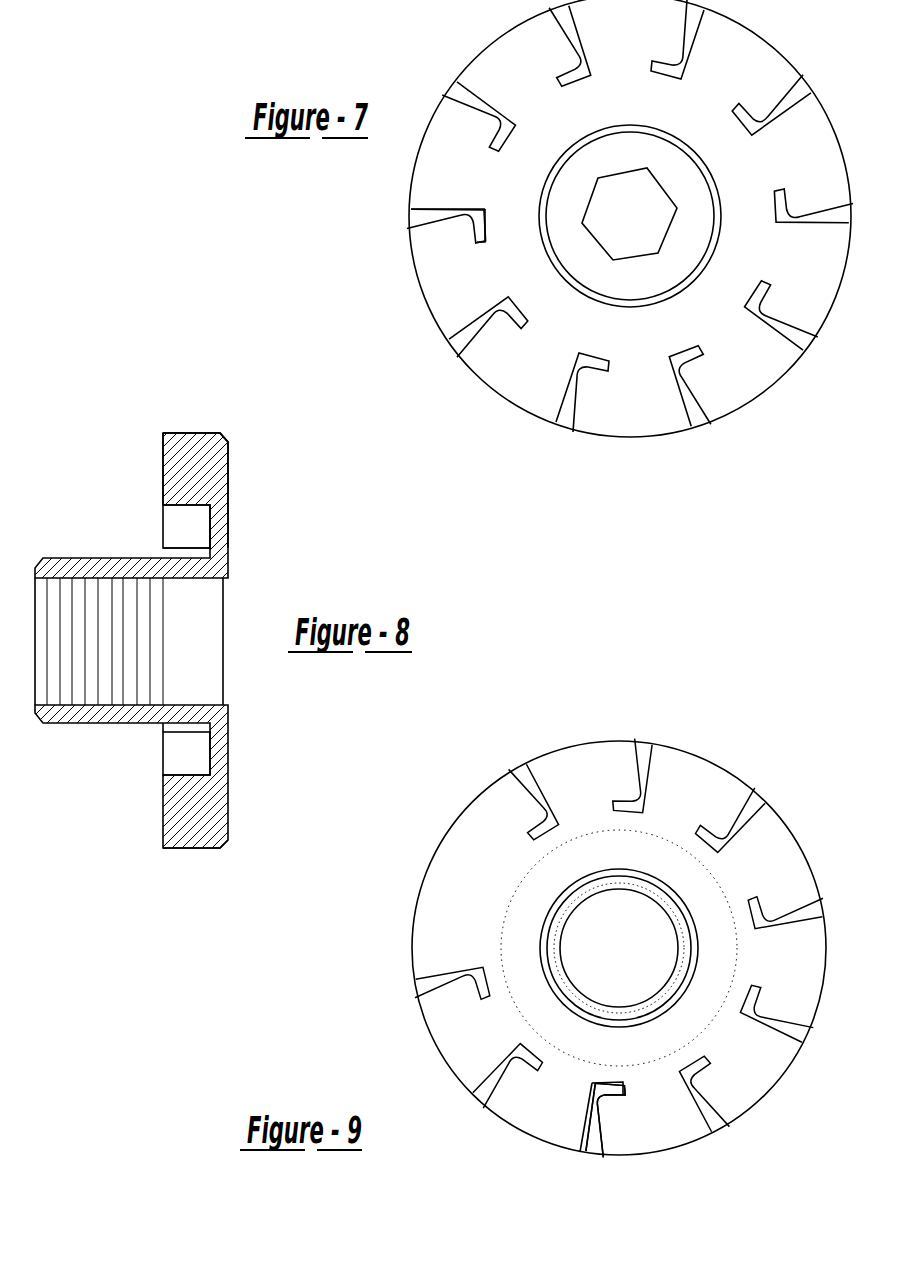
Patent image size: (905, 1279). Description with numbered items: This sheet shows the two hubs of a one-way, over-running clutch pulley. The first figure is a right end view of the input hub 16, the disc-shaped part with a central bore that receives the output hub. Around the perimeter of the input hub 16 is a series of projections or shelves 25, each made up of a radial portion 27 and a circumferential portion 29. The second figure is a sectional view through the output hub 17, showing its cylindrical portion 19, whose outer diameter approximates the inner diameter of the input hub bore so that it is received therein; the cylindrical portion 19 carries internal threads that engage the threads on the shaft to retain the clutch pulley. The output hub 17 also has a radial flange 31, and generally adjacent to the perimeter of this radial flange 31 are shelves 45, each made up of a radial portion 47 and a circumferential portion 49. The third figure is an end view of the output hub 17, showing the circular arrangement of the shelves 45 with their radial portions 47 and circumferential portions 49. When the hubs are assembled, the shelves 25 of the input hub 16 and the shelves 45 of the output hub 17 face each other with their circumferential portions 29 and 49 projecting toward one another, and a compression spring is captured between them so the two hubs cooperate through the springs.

In FIG. 7, the input hub 16 is at (699, 429).
In FIG. 8, the output hub 17 is at (190, 630).
In FIG. 9, the output hub 17 is at (738, 1112).
In FIG. 8, the cylindrical portion 19 is at (62, 712).
In FIG. 7, the shelves 25 is at (407, 219).
In FIG. 7, the radial portion 27 is at (433, 223).
In FIG. 7, the circumferential portion 29 is at (480, 228).
In FIG. 8, the radial flange 31 is at (222, 508).
In FIG. 8, the shelves 45 is at (162, 469).
In FIG. 9, the shelves 45 is at (604, 1134).
In FIG. 8, the radial portion 47 is at (190, 443).
In FIG. 9, the radial portion 47 is at (592, 1128).
In FIG. 8, the circumferential portion 49 is at (173, 525).
In FIG. 9, the circumferential portion 49 is at (602, 1083).